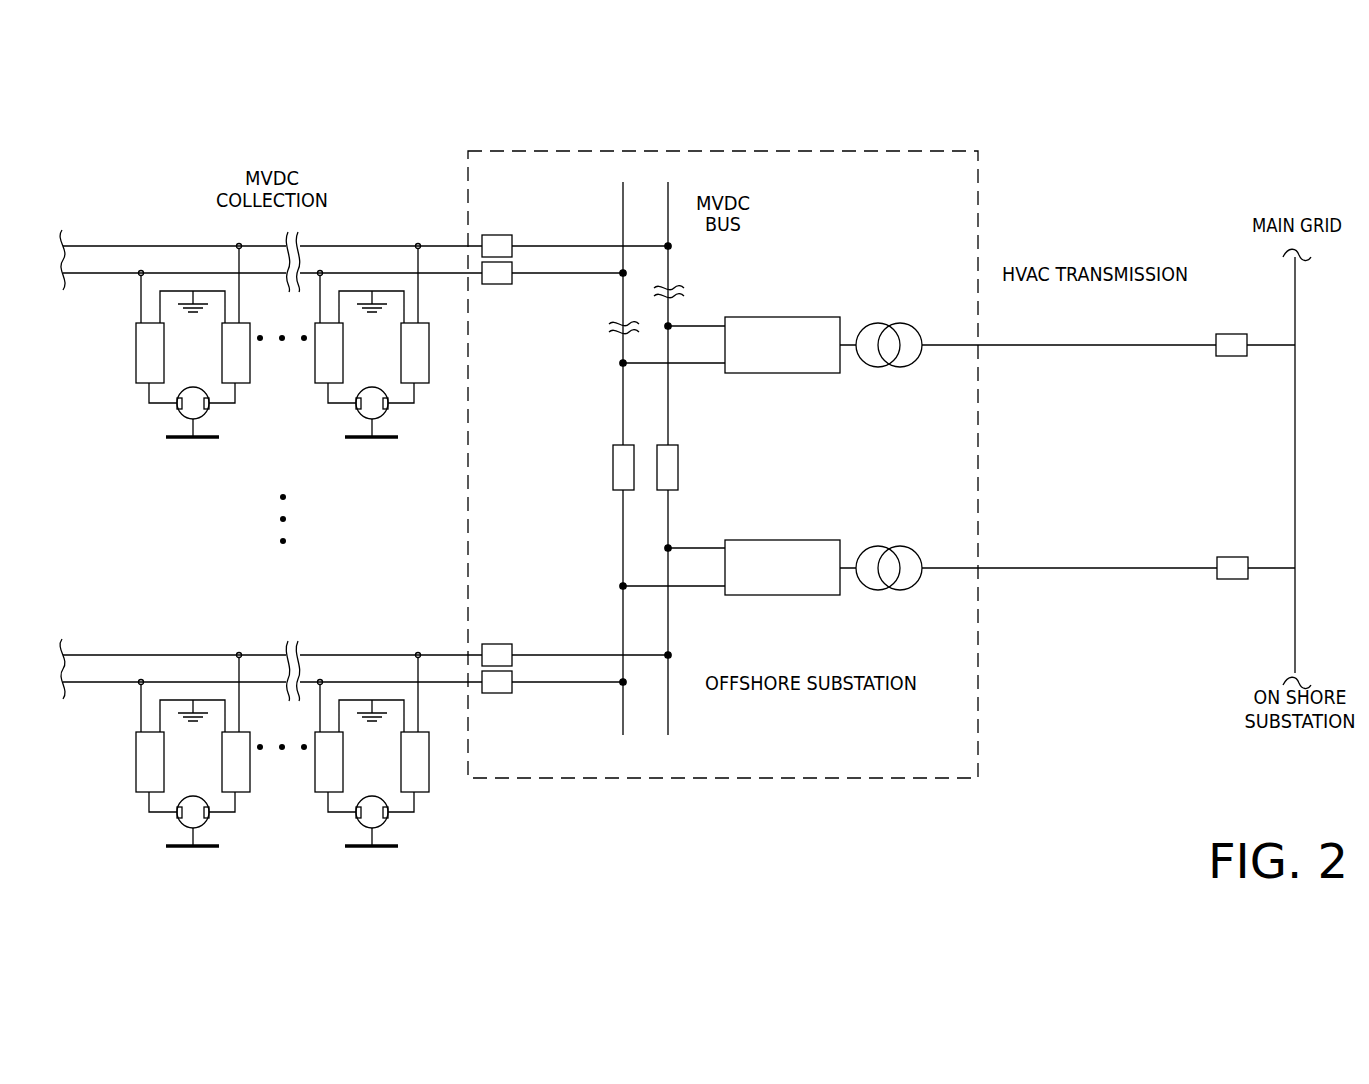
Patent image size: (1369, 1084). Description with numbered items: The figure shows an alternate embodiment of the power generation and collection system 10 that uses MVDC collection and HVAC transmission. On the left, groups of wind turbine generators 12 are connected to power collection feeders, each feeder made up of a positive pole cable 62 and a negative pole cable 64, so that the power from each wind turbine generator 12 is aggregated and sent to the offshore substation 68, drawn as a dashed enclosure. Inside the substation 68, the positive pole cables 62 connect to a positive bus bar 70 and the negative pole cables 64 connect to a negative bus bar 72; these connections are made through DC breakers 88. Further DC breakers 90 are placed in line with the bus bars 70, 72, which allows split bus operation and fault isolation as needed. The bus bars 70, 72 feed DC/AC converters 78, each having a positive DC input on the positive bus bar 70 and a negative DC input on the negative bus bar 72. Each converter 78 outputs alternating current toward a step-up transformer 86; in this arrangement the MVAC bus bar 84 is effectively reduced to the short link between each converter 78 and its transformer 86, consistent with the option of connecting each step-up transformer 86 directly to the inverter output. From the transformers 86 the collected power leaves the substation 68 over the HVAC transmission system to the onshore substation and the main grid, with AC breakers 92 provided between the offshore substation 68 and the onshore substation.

The power generation and collection system 10 is at (1094, 203).
The wind turbine generator 12 is at (177, 456).
The positive pole cable 62 is at (345, 246).
The negative pole cable 64 is at (88, 274).
The offshore substation 68 is at (696, 139).
The positive bus bar 70 is at (668, 723).
The negative bus bar 72 is at (623, 523).
The DC/AC converter 78 is at (786, 302).
The MVAC bus bar 84 is at (850, 337).
The step-up transformer 86 is at (893, 312).
The DC breaker 88 is at (508, 223).
The DC breaker 90 is at (696, 466).
The AC breaker 92 is at (1233, 362).